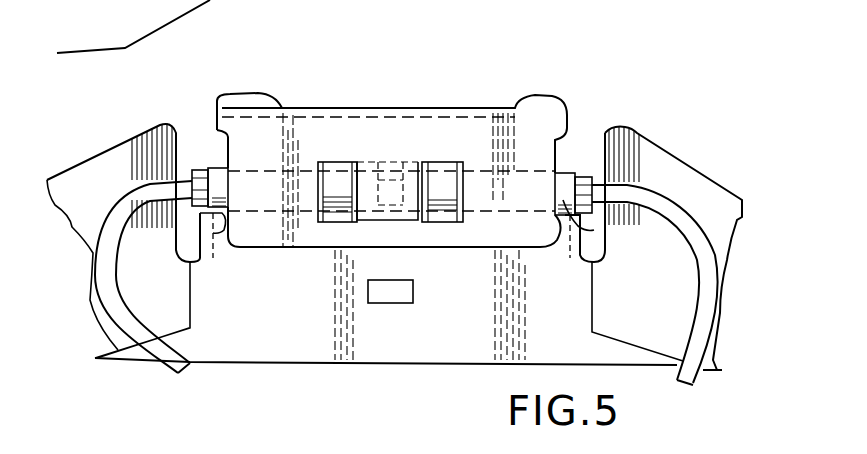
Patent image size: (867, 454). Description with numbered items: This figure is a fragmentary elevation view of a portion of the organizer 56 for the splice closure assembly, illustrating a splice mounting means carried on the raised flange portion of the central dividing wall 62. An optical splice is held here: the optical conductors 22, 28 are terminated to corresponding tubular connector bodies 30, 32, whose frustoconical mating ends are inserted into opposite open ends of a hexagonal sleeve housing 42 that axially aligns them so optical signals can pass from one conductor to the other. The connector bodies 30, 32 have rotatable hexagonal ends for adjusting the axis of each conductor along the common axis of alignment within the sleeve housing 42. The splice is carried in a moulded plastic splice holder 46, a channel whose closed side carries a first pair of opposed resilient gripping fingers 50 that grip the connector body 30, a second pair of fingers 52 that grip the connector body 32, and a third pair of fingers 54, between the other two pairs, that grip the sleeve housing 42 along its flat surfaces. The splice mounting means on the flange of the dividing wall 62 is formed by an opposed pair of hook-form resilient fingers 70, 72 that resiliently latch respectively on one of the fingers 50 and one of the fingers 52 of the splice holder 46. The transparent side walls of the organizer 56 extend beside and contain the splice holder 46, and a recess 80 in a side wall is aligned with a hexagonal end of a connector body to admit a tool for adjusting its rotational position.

The conductor 22 is at (110, 288).
The conductor 28 is at (713, 275).
The connector body 30 is at (336, 224).
The connector body 32 is at (577, 170).
The sleeve housing 42 is at (353, 185).
The splice holder 46 is at (452, 105).
The first pair of opposed resilient gripping fingers 50 is at (280, 233).
The second pair of opposed resilient gripping fingers 52 is at (523, 243).
The third pair of opposed resilient gripping fingers 54 is at (395, 220).
The organizer 56 is at (107, 165).
The dividing wall 62 is at (362, 322).
The resilient finger 70 is at (218, 233).
The resilient finger 72 is at (580, 240).
The recess 80 is at (178, 153).